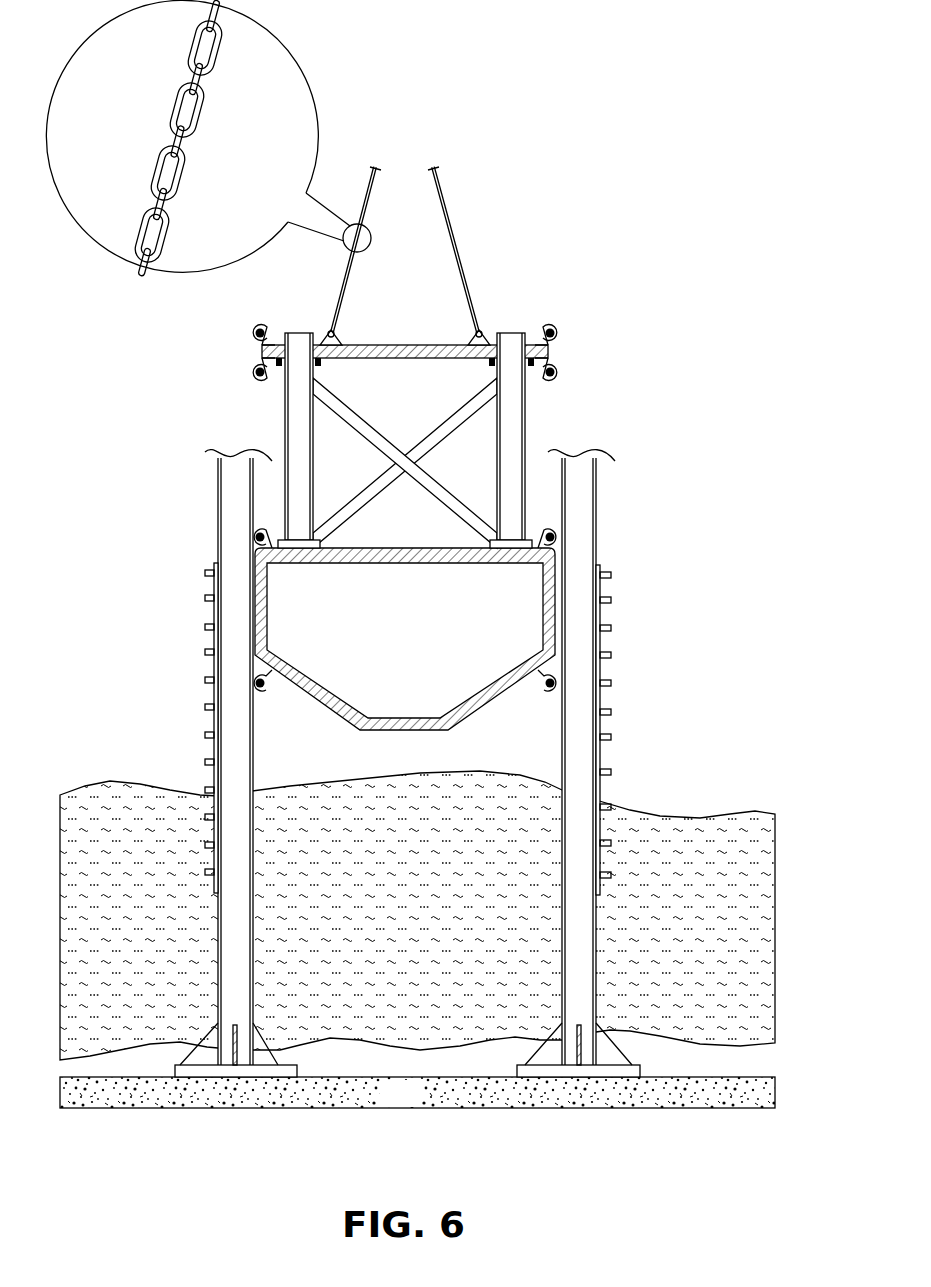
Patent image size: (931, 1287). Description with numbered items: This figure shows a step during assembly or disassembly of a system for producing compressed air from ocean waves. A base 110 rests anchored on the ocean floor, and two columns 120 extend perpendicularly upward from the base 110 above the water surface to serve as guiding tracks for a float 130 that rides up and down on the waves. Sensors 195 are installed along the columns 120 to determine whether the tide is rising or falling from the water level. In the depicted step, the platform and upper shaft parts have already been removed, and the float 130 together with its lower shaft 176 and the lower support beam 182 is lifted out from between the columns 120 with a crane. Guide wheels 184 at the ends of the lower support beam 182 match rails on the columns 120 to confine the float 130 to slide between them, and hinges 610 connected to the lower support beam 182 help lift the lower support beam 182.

The base 110 is at (418, 1106).
The columns 120 is at (237, 933).
The float 130 is at (422, 635).
The lower shaft 176 is at (285, 410).
The lower support beam 182 is at (384, 345).
The guide wheels 184 is at (556, 349).
The sensors 195 is at (205, 627).
The hinges 610 is at (331, 338).